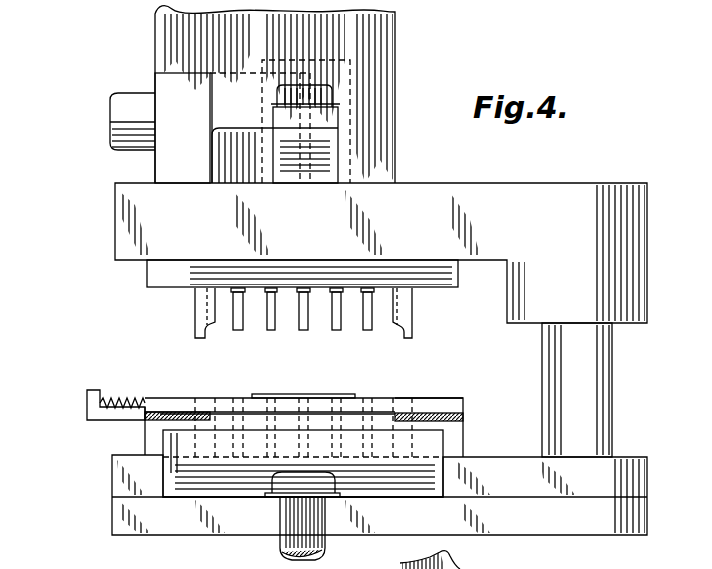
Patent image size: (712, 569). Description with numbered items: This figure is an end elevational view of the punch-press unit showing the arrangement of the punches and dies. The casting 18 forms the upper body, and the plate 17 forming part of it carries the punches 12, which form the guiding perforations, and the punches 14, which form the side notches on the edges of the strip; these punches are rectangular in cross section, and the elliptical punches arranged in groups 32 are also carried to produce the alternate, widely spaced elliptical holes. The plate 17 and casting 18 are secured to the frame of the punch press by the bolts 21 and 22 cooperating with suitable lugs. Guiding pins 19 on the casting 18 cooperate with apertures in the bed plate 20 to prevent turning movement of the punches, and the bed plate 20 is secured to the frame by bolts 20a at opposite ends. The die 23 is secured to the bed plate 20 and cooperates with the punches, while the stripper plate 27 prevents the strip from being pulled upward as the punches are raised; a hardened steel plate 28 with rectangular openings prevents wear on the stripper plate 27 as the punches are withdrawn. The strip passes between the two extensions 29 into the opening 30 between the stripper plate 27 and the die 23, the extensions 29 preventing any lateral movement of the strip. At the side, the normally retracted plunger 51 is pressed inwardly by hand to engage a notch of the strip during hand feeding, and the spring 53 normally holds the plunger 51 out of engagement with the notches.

The punches 12 is at (270, 331).
The punches 14 is at (195, 321).
The plate 17 is at (150, 277).
The casting 18 is at (122, 233).
The guiding pins 19 is at (612, 392).
The bed plate 20 is at (115, 498).
The bolts 20a is at (273, 483).
The bolt 21 is at (335, 101).
The bolt 22 is at (115, 140).
The die 23 is at (458, 437).
The stripper plate 27 is at (437, 400).
The hardened steel plate 28 is at (306, 396).
The extensions 29 is at (145, 422).
The opening 30 is at (375, 415).
The groups of punches 32 is at (237, 331).
The plunger 51 is at (110, 423).
The spring 53 is at (123, 400).